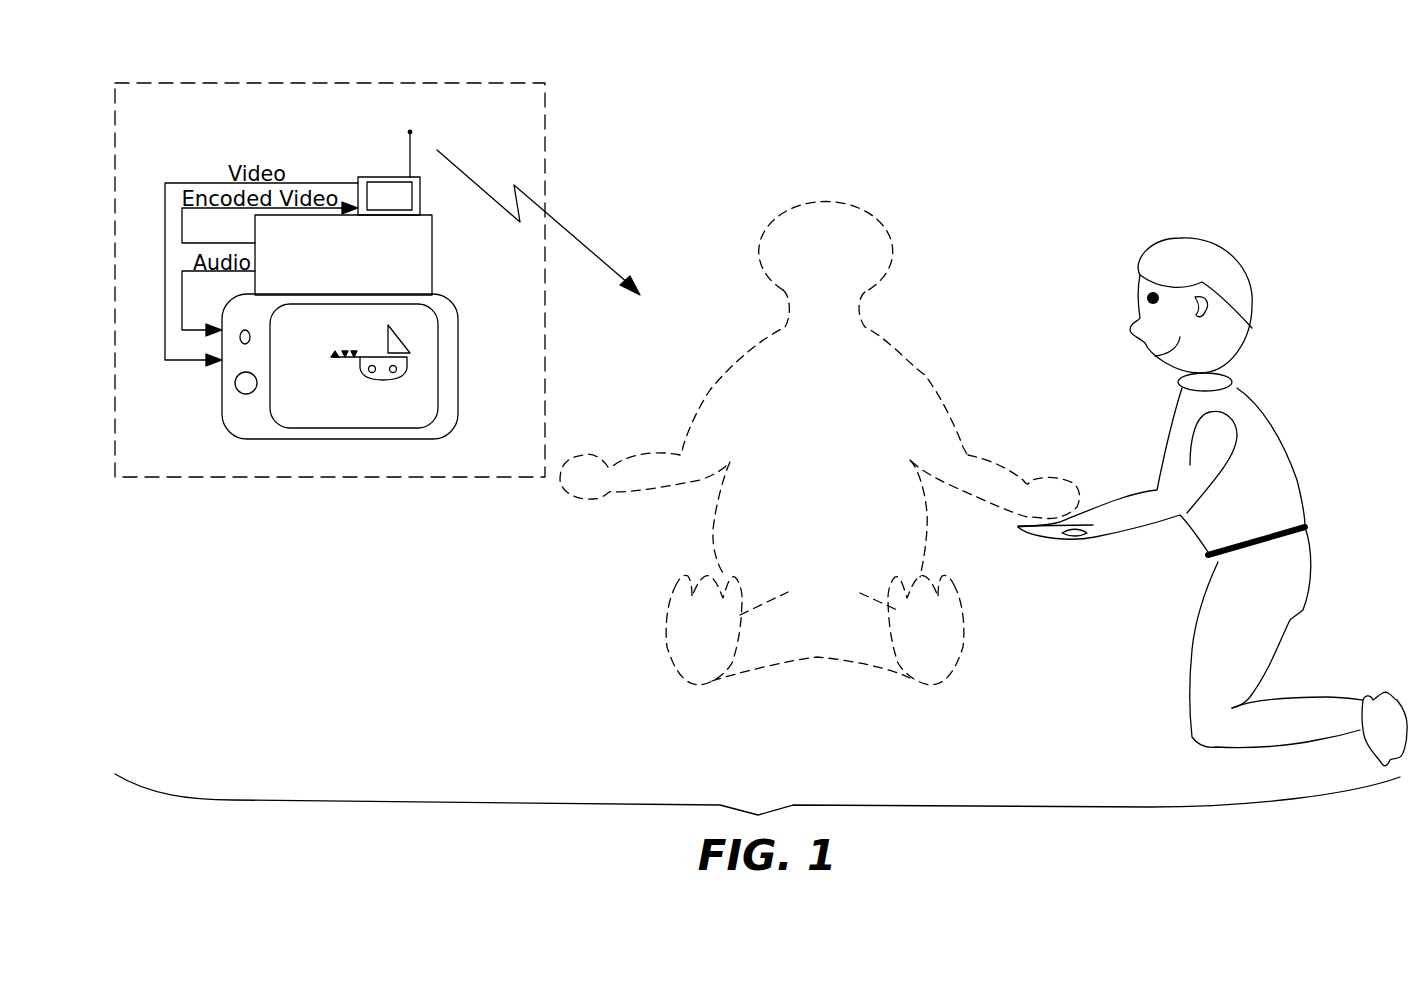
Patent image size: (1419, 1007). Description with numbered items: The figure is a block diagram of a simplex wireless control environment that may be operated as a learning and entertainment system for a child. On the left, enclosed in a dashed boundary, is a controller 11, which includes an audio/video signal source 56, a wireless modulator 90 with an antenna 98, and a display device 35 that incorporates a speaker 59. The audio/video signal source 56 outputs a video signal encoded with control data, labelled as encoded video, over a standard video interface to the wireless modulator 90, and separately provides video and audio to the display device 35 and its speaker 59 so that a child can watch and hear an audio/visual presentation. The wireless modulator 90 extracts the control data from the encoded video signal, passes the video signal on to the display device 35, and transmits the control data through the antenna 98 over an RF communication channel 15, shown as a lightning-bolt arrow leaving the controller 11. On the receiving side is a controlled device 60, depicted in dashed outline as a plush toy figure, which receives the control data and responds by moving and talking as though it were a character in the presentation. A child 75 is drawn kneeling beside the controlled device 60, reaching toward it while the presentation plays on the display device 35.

The controller 11 is at (187, 478).
The RF communication channel 15 is at (570, 233).
The display device 35 is at (222, 420).
The audio/video signal source 56 is at (432, 268).
The speaker 59 is at (235, 385).
The controlled device 60 is at (923, 367).
The child / user 75 is at (1253, 387).
The wireless modulator 90 is at (360, 177).
The antenna 98 is at (412, 134).